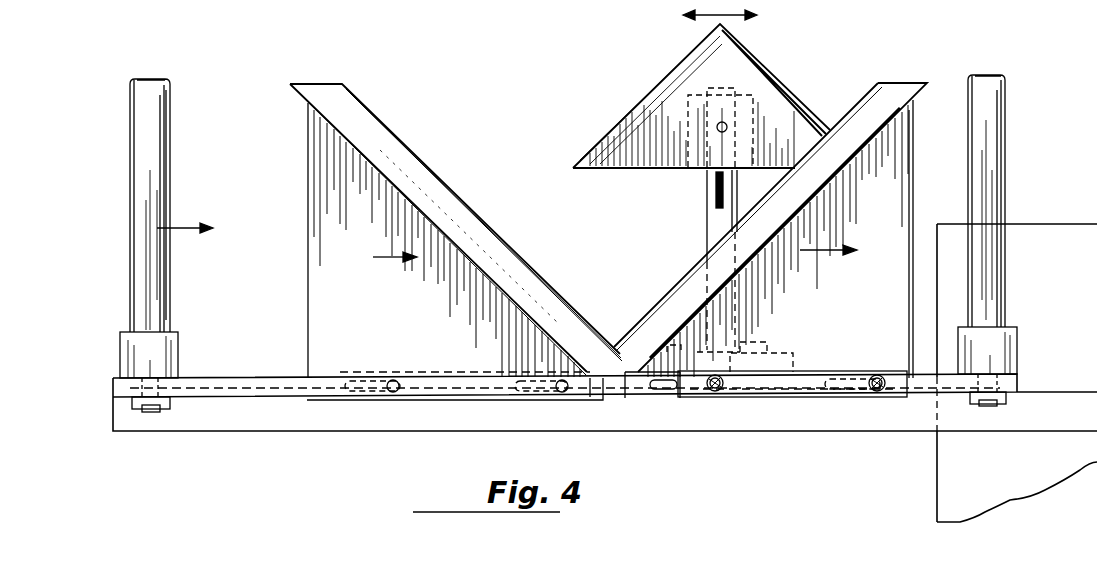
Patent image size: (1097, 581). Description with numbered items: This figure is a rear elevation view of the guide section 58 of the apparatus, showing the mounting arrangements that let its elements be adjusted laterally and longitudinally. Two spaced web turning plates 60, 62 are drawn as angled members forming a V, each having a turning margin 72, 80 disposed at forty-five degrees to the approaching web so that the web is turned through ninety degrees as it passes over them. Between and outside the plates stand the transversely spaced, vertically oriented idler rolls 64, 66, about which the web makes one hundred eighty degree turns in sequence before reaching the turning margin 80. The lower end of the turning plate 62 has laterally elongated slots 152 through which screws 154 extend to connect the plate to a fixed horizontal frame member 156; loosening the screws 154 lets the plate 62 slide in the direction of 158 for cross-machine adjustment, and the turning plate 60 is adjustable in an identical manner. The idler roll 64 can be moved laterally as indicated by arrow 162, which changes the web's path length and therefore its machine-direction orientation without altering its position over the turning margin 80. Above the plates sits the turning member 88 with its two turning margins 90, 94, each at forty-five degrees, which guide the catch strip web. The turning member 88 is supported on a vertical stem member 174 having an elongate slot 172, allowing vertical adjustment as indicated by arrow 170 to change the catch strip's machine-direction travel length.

The guide section 58 is at (493, 66).
The turning plate 60 is at (340, 172).
The turning plate 62 is at (888, 204).
The idler roll 64 is at (145, 195).
The idler roll 66 is at (990, 136).
The turning margin 72 is at (372, 130).
The turning margin 80 is at (896, 92).
The turning member 88 is at (728, 27).
The turning margin 90 is at (660, 82).
The second turning margin 94 is at (775, 82).
The laterally elongated slots 152 is at (663, 391).
The screws 154 is at (723, 381).
The fixed horizontal frame member 156 is at (765, 415).
The direction of lateral adjustment 158 is at (830, 253).
The arrow indicating lateral movement of idler roll 162 is at (181, 232).
The arrow indicating vertical adjustment 170 is at (660, 168).
The elongate slot 172 is at (716, 192).
The vertical stem member 174 is at (710, 226).